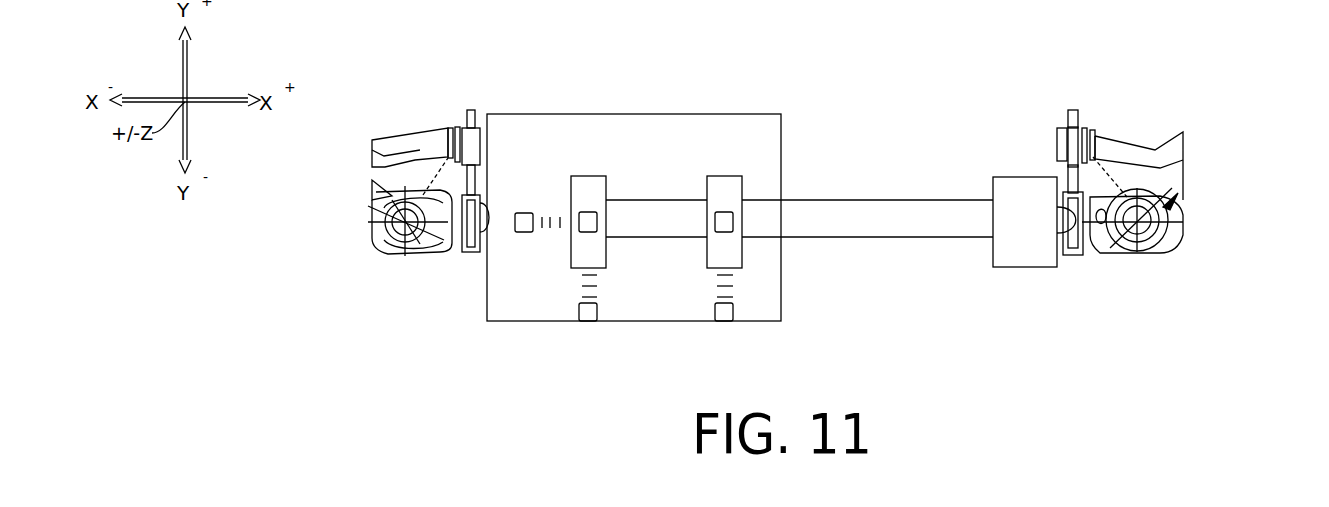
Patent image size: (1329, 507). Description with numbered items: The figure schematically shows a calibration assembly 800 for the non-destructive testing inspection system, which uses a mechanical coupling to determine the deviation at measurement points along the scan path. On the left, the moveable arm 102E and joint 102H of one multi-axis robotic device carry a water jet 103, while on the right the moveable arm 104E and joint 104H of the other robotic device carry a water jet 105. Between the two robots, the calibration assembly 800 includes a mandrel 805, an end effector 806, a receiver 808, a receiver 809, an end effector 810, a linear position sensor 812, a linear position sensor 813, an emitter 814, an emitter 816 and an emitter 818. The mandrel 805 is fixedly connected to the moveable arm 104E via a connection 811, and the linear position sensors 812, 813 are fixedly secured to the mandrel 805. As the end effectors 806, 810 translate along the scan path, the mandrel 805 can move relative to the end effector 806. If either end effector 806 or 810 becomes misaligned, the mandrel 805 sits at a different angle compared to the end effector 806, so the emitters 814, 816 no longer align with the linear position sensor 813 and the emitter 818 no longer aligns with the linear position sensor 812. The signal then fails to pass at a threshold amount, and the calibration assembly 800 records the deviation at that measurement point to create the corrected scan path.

The calibration assembly 800 is at (933, 74).
The end effector 806 is at (567, 114).
The mandrel 805 is at (817, 200).
The emitter 814 is at (523, 213).
The linear position sensor 813 is at (583, 213).
The receiver 809 is at (605, 178).
The receiver 808 is at (707, 184).
The linear position sensor 812 is at (733, 215).
The emitter 816 is at (597, 312).
The emitter 818 is at (733, 312).
The end effector 810 is at (1022, 177).
The connection 811 is at (1062, 227).
The water jet 103 is at (404, 140).
The water jet 105 is at (1105, 140).
The joint 102H is at (380, 220).
The moveable arm 102E is at (397, 257).
The joint 104H is at (1170, 217).
The moveable arm 104E is at (1163, 243).